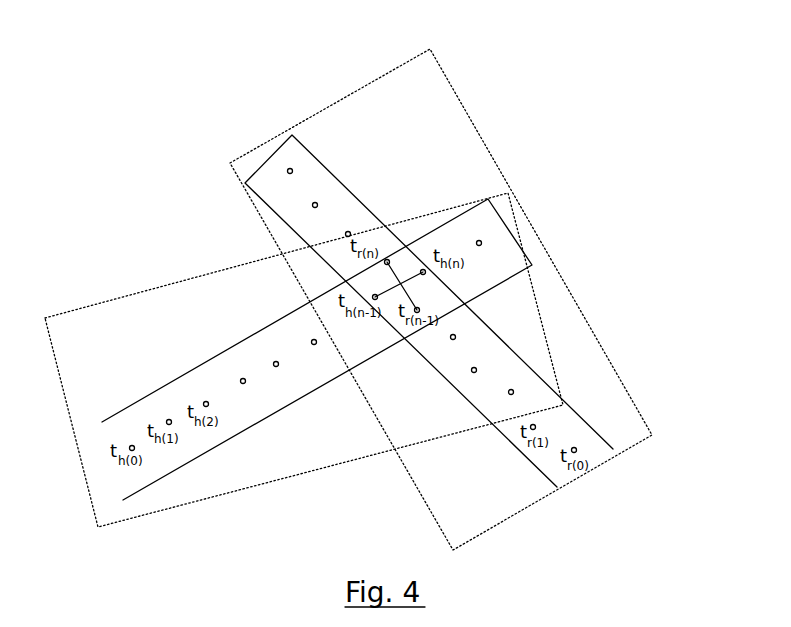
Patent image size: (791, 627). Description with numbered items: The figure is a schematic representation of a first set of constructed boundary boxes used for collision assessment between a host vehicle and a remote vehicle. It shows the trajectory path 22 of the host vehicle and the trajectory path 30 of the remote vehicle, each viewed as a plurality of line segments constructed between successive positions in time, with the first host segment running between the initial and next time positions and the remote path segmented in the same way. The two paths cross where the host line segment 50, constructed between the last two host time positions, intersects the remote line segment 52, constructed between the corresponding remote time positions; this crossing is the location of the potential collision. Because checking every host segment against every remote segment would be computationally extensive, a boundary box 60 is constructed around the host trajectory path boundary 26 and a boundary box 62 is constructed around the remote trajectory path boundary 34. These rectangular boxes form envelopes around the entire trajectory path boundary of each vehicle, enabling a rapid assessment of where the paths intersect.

The trajectory path of the host vehicle 22 is at (277, 366).
The trajectory path boundary 26 is at (181, 374).
The trajectory path of the remote vehicle 30 is at (473, 371).
The trajectory path boundary 34 is at (313, 155).
The line segment 50 is at (425, 274).
The line segment 52 is at (398, 276).
The boundary box 60 is at (268, 484).
The boundary box 62 is at (597, 335).